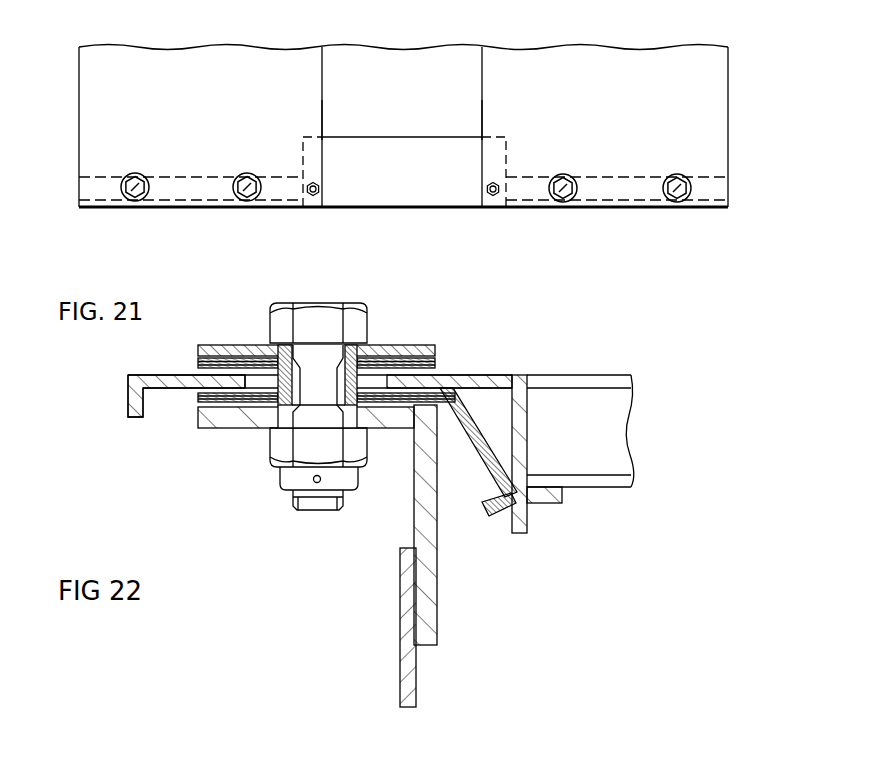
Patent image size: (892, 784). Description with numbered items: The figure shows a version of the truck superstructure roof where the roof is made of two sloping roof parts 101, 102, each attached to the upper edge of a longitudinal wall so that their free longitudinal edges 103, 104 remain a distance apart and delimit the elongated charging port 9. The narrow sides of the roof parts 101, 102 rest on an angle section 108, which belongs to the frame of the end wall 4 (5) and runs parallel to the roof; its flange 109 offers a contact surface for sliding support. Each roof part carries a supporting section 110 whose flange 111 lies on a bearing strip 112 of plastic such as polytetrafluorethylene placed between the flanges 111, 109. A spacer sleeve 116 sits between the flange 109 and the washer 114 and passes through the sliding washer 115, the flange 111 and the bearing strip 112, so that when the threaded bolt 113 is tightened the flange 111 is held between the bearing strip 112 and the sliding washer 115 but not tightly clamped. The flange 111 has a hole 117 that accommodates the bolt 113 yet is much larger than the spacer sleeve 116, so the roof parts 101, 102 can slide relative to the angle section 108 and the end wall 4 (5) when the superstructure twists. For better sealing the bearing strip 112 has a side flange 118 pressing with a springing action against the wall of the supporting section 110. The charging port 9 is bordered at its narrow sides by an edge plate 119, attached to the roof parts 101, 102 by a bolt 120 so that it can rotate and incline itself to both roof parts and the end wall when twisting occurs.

In FIG. 22, the end wall 4 is at (408, 615).
In FIG. 22, the end wall 5 is at (365, 627).
In FIG. 21, the charging port 9 is at (401, 75).
In FIG. 21, the roof part 101 is at (642, 88).
In FIG. 22, the roof part 101 is at (588, 408).
In FIG. 21, the roof part 102 is at (149, 78).
In FIG. 22, the roof part 102 is at (649, 416).
In FIG. 21, the free longitudinal edge 103 is at (482, 95).
In FIG. 21, the free longitudinal edge 104 is at (322, 95).
In FIG. 22, the angle section 108 is at (427, 515).
In FIG. 22, the flange 109 is at (243, 414).
In FIG. 21, the supporting section 110 is at (175, 208).
In FIG. 22, the supporting section 110 is at (520, 433).
In FIG. 22, the flange 111 is at (188, 386).
In FIG. 22, the bearing strip 112 is at (200, 397).
In FIG. 21, the threaded bolt 113 is at (243, 184).
In FIG. 22, the threaded bolt 113 is at (309, 304).
In FIG. 22, the washer 114 is at (243, 346).
In FIG. 22, the sliding washer 115 is at (200, 363).
In FIG. 22, the spacer sleeve 116 is at (357, 408).
In FIG. 22, the hole 117 is at (373, 382).
In FIG. 22, the side flange 118 is at (475, 453).
In FIG. 21, the edge plate 119 is at (387, 167).
In FIG. 21, the bolt 120 is at (307, 182).